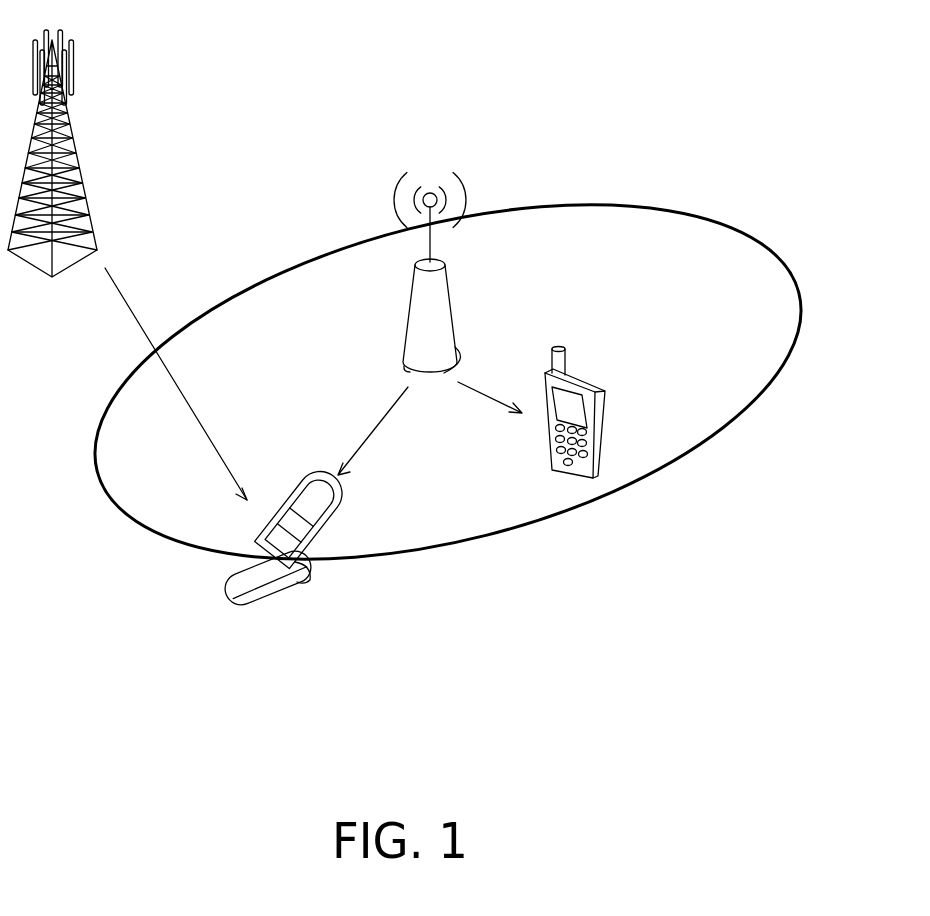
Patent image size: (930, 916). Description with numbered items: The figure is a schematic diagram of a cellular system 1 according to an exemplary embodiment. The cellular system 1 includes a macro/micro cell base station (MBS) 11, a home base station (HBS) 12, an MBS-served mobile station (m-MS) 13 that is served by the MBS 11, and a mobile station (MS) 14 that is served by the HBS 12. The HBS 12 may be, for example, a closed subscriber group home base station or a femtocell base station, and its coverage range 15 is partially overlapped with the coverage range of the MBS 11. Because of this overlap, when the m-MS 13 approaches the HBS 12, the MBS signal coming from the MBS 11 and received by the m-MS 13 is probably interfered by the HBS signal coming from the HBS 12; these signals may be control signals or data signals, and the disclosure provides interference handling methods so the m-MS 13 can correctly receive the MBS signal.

The cellular system 1 is at (745, 665).
The macro/micro cell base station 11 is at (80, 197).
The home base station 12 is at (403, 342).
The MBS-served mobile station 13 is at (333, 537).
The mobile station 14 is at (562, 468).
The coverage range 15 is at (330, 248).